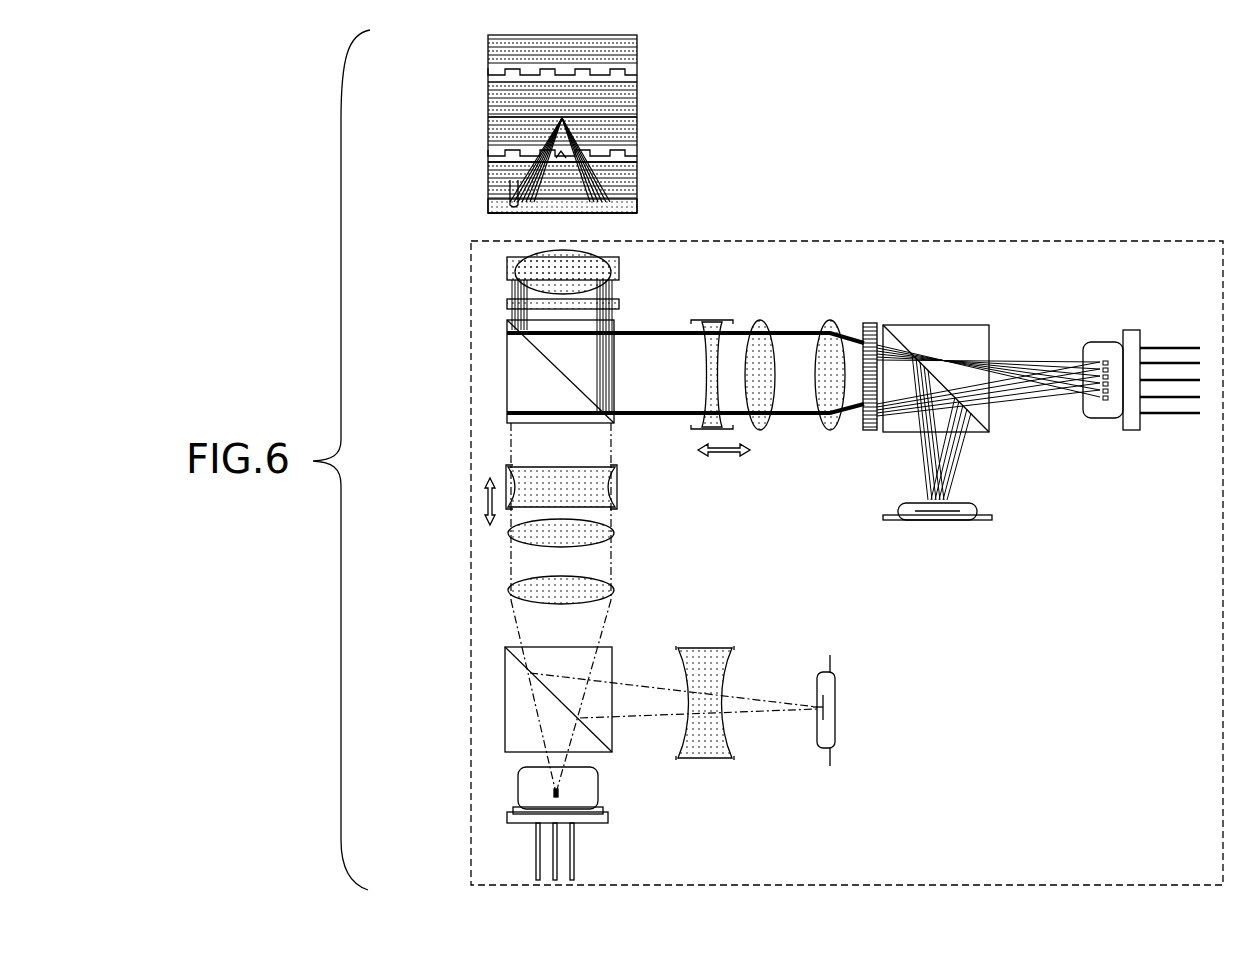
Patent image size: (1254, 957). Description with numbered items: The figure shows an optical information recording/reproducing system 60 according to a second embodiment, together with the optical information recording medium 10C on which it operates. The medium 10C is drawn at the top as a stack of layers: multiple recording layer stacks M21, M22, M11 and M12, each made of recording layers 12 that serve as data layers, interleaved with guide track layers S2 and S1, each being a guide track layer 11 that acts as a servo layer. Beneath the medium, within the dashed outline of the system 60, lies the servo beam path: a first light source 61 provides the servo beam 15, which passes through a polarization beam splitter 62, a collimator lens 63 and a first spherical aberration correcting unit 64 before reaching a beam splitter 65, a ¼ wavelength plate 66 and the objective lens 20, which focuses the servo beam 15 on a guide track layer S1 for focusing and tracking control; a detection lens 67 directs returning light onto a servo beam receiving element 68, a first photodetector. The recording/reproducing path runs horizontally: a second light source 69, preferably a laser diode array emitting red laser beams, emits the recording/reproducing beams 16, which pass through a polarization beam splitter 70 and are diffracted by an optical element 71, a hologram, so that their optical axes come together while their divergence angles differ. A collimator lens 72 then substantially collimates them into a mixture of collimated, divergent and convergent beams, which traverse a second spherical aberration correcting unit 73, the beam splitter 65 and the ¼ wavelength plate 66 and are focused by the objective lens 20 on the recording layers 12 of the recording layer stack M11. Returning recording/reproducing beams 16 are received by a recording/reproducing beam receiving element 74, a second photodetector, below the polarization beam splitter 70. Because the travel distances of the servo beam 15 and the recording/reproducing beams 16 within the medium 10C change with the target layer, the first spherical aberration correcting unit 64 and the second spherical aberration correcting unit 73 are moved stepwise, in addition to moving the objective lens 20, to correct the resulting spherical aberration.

The optical information recording medium 10C is at (438, 35).
The recording layer stack M21 is at (488, 36).
The guide track layer S2 is at (542, 75).
The recording layer stack M22 is at (488, 83).
The recording layer stack M11 is at (488, 118).
The guide track layer S1 is at (542, 156).
The recording layer stack M12 is at (488, 164).
The recording layers 12 is at (639, 124).
The guide track layer 11 is at (639, 159).
The recording/reproducing beams 16 is at (508, 200).
The servo beam 15 is at (530, 211).
The optical information recording/reproducing system 60 is at (1005, 241).
The objective lens 20 is at (622, 267).
The ¼ wavelength plate 66 is at (622, 302).
The beam splitter 65 is at (618, 379).
The first spherical aberration correcting unit 64 is at (620, 478).
The collimator lens 63 is at (614, 588).
The polarization beam splitter 62 is at (614, 664).
The first light source 61 is at (600, 790).
The detection lens 67 is at (705, 762).
The servo beam receiving element 68 is at (830, 766).
The second spherical aberration correcting unit 73 is at (760, 320).
The collimator lens 72 is at (830, 320).
The optical element 71 is at (872, 322).
The polarization beam splitter 70 is at (952, 324).
The second light source 69 is at (1105, 340).
The recording/reproducing beam receiving element 74 is at (952, 524).